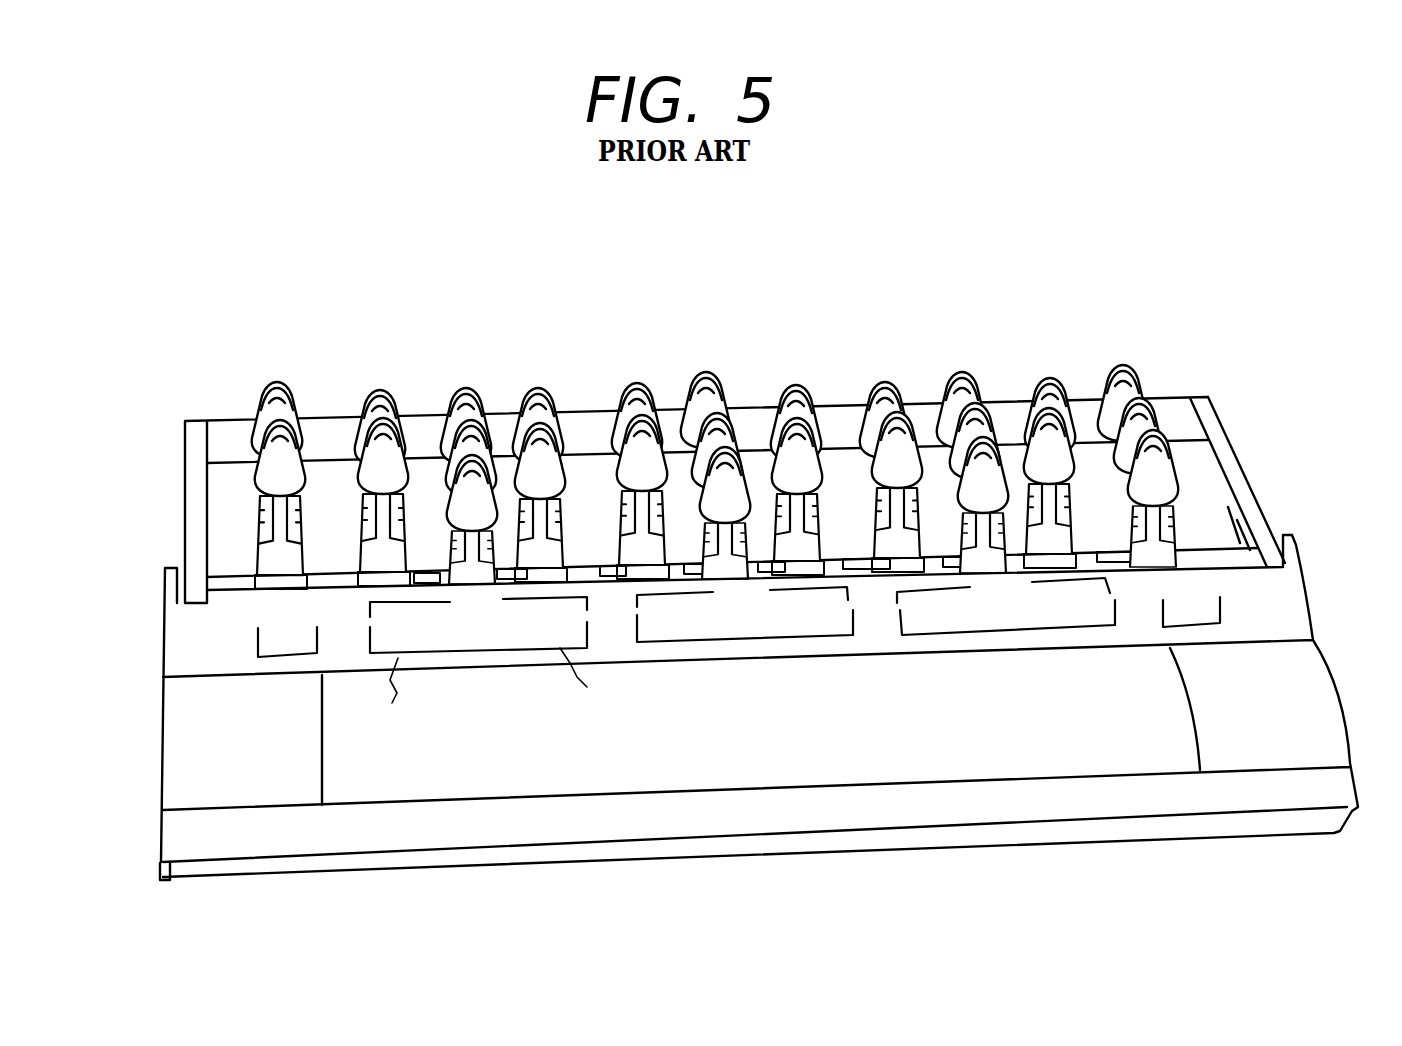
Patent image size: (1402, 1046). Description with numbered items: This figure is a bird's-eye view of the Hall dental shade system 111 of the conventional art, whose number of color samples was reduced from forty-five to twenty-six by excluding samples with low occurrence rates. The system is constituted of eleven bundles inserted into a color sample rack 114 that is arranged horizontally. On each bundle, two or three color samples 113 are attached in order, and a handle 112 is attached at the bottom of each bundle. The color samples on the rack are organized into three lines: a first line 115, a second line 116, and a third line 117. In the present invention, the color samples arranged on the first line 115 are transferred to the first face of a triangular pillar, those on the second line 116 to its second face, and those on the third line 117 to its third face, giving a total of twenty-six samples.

The Hall dental shade system 111 is at (683, 231).
The handle 112 is at (262, 518).
The color samples 113 is at (265, 398).
The color sample rack 114 is at (435, 782).
The first line 115 is at (180, 409).
The second line 116 is at (180, 454).
The third line 117 is at (180, 499).